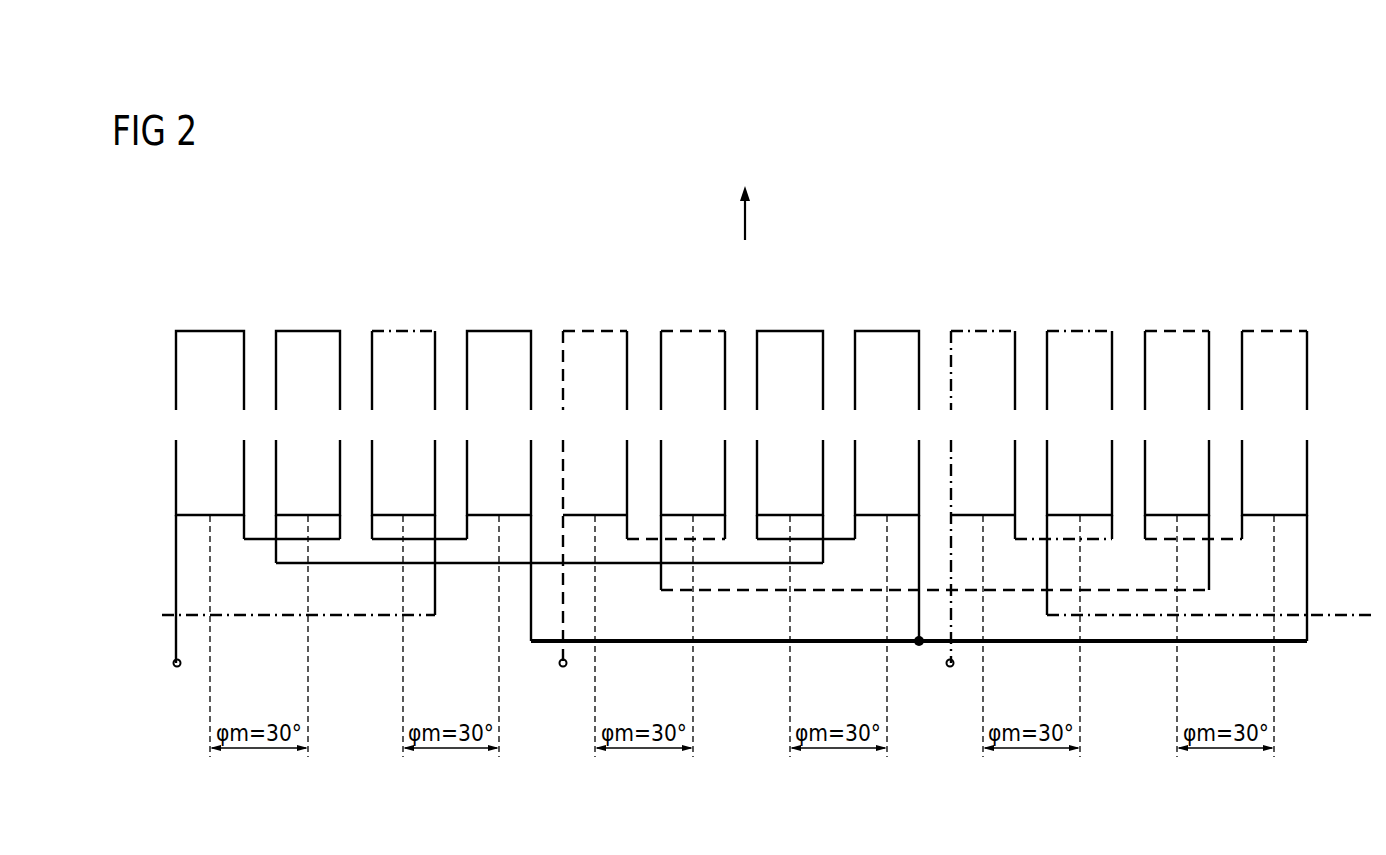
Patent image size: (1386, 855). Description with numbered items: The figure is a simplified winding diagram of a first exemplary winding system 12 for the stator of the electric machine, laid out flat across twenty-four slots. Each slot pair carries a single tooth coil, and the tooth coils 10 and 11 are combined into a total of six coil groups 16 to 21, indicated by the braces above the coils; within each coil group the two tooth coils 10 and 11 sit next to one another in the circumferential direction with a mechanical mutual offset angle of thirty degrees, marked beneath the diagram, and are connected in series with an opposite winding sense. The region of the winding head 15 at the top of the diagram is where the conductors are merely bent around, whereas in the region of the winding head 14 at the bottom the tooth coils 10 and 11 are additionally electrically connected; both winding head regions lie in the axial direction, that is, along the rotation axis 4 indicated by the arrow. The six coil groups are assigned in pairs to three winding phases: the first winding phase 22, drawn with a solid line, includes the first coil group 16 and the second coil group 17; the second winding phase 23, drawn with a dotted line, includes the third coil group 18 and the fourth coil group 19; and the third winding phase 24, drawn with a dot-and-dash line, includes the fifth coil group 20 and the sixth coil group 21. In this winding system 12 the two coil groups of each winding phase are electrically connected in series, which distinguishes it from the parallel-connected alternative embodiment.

The rotation axis 4 is at (745, 211).
The tooth coil 10 is at (176, 388).
The tooth coil 11 is at (276, 465).
The winding system 12 is at (537, 240).
The winding head 14 is at (158, 513).
The winding head 15 is at (158, 295).
The first coil group 16 is at (176, 303).
The second coil group 17 is at (757, 303).
The third coil group 18 is at (563, 303).
The fourth coil group 19 is at (1145, 303).
The fifth coil group 20 is at (1112, 303).
The sixth coil group 21 is at (531, 303).
The first winding phase 22 is at (178, 646).
The second winding phase 23 is at (564, 646).
The third winding phase 24 is at (951, 646).